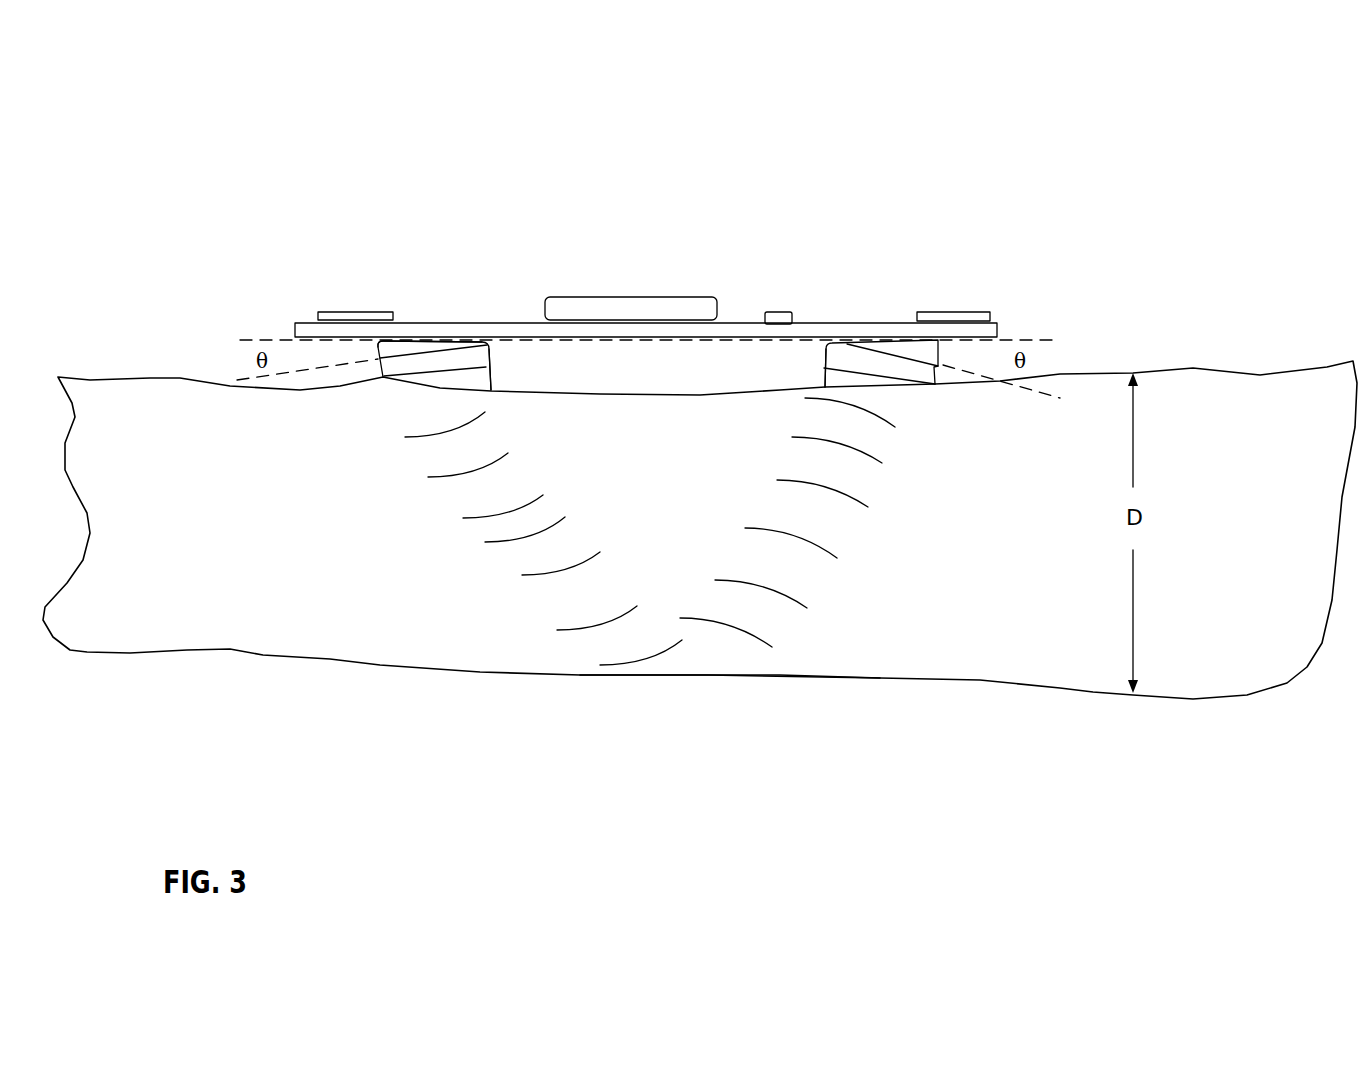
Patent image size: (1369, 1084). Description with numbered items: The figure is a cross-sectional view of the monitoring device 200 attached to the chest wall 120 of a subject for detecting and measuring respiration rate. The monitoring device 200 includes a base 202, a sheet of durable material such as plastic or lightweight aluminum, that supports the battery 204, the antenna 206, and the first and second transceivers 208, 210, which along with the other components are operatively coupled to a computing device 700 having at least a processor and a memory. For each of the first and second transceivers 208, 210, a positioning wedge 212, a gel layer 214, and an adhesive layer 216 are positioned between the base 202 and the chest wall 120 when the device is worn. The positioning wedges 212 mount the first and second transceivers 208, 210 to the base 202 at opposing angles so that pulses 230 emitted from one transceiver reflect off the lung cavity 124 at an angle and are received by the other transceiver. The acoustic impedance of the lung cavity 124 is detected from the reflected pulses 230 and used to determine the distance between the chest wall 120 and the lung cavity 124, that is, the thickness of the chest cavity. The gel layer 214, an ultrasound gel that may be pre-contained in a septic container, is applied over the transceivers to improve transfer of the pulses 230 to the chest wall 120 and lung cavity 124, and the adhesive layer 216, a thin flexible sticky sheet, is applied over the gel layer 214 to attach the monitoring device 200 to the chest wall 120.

The chest wall 120 is at (1190, 368).
The lung cavity 124 is at (708, 675).
The monitoring device 200 is at (188, 170).
The base 202 is at (440, 324).
The battery 204 is at (563, 304).
The antenna 206 is at (330, 312).
The first transceiver 208 is at (388, 342).
The second transceiver 210 is at (860, 363).
The positioning wedge 212 is at (400, 365).
The gel layer 214 is at (481, 382).
The adhesive layer 216 is at (443, 392).
The pulses 230 is at (433, 525).
The computing device 700 is at (775, 310).